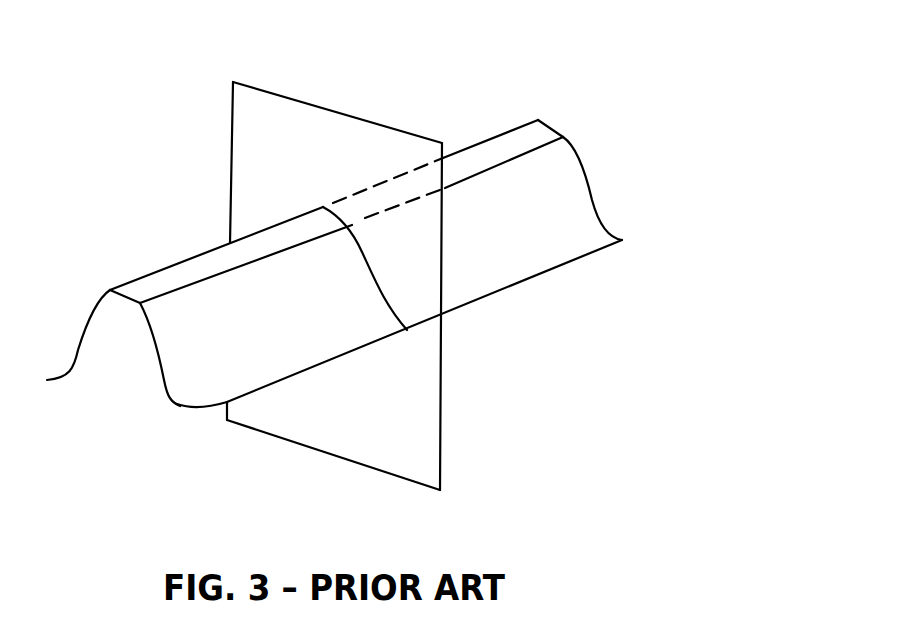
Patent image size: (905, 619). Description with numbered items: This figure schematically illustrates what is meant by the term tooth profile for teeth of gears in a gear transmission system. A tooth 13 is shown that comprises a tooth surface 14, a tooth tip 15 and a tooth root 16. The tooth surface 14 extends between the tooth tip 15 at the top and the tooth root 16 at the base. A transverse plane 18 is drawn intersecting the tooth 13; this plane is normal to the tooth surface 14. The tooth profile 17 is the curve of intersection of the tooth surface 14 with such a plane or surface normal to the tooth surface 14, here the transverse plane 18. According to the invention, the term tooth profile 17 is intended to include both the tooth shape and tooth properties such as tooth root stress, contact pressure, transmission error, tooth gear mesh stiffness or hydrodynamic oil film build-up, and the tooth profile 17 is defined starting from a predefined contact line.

The tooth 13 is at (362, 252).
The tooth surface 14 is at (232, 350).
The tooth tip 15 is at (573, 127).
The tooth root 16 is at (621, 231).
The tooth profile 17 is at (378, 251).
The transverse plane 18 is at (227, 165).